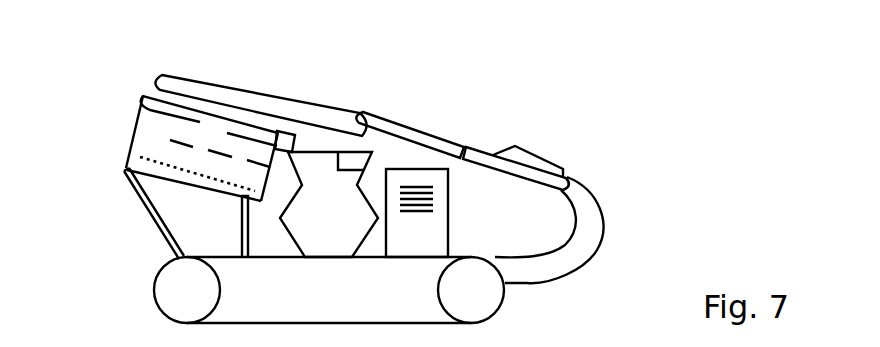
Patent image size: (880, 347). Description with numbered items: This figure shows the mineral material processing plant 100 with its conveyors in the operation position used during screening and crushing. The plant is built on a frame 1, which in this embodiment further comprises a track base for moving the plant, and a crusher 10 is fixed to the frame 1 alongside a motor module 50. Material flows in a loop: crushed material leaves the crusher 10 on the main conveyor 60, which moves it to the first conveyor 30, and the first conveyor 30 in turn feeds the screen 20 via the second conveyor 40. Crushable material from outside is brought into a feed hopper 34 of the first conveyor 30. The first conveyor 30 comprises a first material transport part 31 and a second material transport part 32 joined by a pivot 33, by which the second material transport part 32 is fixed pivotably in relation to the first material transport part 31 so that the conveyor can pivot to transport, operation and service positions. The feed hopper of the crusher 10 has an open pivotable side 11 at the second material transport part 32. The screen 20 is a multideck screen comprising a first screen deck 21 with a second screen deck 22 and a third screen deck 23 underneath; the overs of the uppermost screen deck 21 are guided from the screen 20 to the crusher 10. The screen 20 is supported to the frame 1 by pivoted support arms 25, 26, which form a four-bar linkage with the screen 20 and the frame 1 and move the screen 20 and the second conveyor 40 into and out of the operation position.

The mineral material processing plant 100 is at (660, 78).
The frame 1 is at (364, 310).
The crusher 10 is at (313, 232).
The open pivotable side 11 is at (372, 158).
The screen 20 is at (167, 100).
The first screen deck 21 is at (140, 96).
The second screen deck 22 is at (154, 136).
The third screen deck 23 is at (138, 155).
The support arm 25 is at (243, 238).
The support arm 26 is at (138, 203).
The first conveyor 30 is at (499, 117).
The first material transport part 31 is at (580, 178).
The second material transport part 32 is at (402, 128).
The pivot 33 is at (466, 148).
The feed hopper 34 is at (552, 170).
The second conveyor 40 is at (268, 106).
The motor module 50 is at (404, 252).
The main conveyor 60 is at (590, 228).